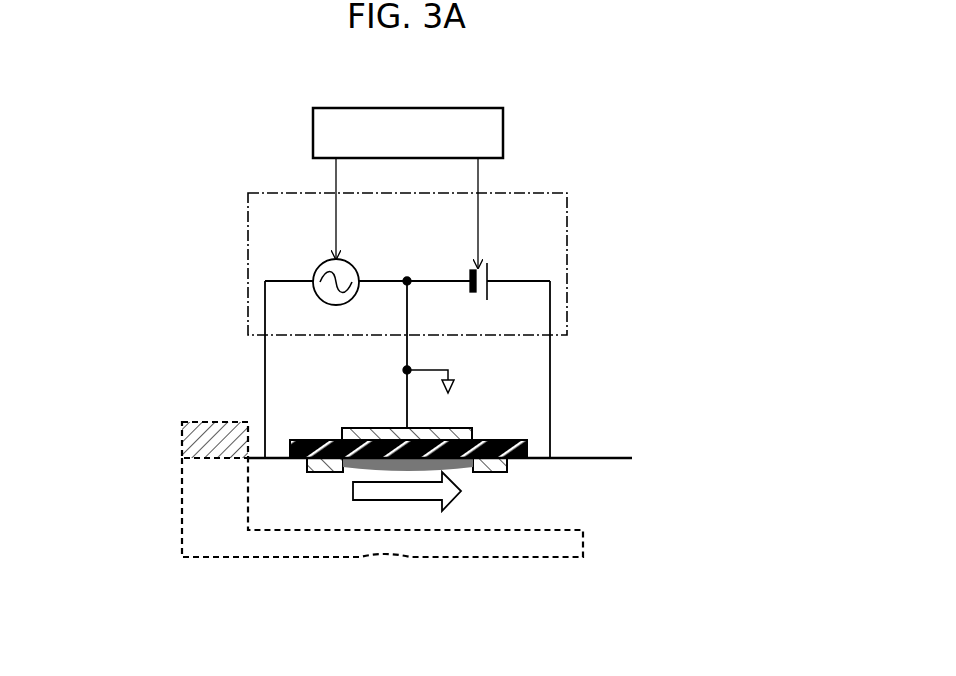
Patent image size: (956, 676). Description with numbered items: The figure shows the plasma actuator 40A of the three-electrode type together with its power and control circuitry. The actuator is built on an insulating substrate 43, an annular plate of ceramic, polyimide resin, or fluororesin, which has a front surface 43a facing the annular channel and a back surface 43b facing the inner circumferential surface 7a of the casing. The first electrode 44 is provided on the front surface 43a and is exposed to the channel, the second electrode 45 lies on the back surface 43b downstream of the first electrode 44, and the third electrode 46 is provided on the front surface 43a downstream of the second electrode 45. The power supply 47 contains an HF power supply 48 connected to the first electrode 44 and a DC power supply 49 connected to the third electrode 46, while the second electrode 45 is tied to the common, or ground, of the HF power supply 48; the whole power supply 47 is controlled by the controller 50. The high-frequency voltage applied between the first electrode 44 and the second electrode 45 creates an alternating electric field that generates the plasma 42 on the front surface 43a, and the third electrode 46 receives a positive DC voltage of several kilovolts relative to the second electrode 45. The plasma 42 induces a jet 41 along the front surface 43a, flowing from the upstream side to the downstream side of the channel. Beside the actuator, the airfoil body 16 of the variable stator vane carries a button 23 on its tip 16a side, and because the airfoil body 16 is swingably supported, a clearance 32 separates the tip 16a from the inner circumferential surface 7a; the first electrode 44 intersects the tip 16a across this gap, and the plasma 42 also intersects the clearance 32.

The controller 50 is at (466, 107).
The power supply 47 is at (544, 192).
The HF power supply 48 is at (360, 270).
The DC power supply 49 is at (490, 275).
The plasma actuator of three-electrode type 40A is at (279, 404).
The second electrode 45 is at (390, 428).
The first electrode 44 is at (320, 470).
The insulating substrate 43 is at (489, 440).
The front surface 43a is at (509, 463).
The back surface 43b is at (518, 440).
The jet 41 is at (400, 478).
The plasma 42 is at (367, 470).
The third electrode 46 is at (497, 470).
The inner circumferential surface 7a is at (630, 459).
The button 23 is at (196, 447).
The airfoil body 16 is at (217, 547).
The tip 16a is at (263, 528).
The clearance 32 is at (567, 516).